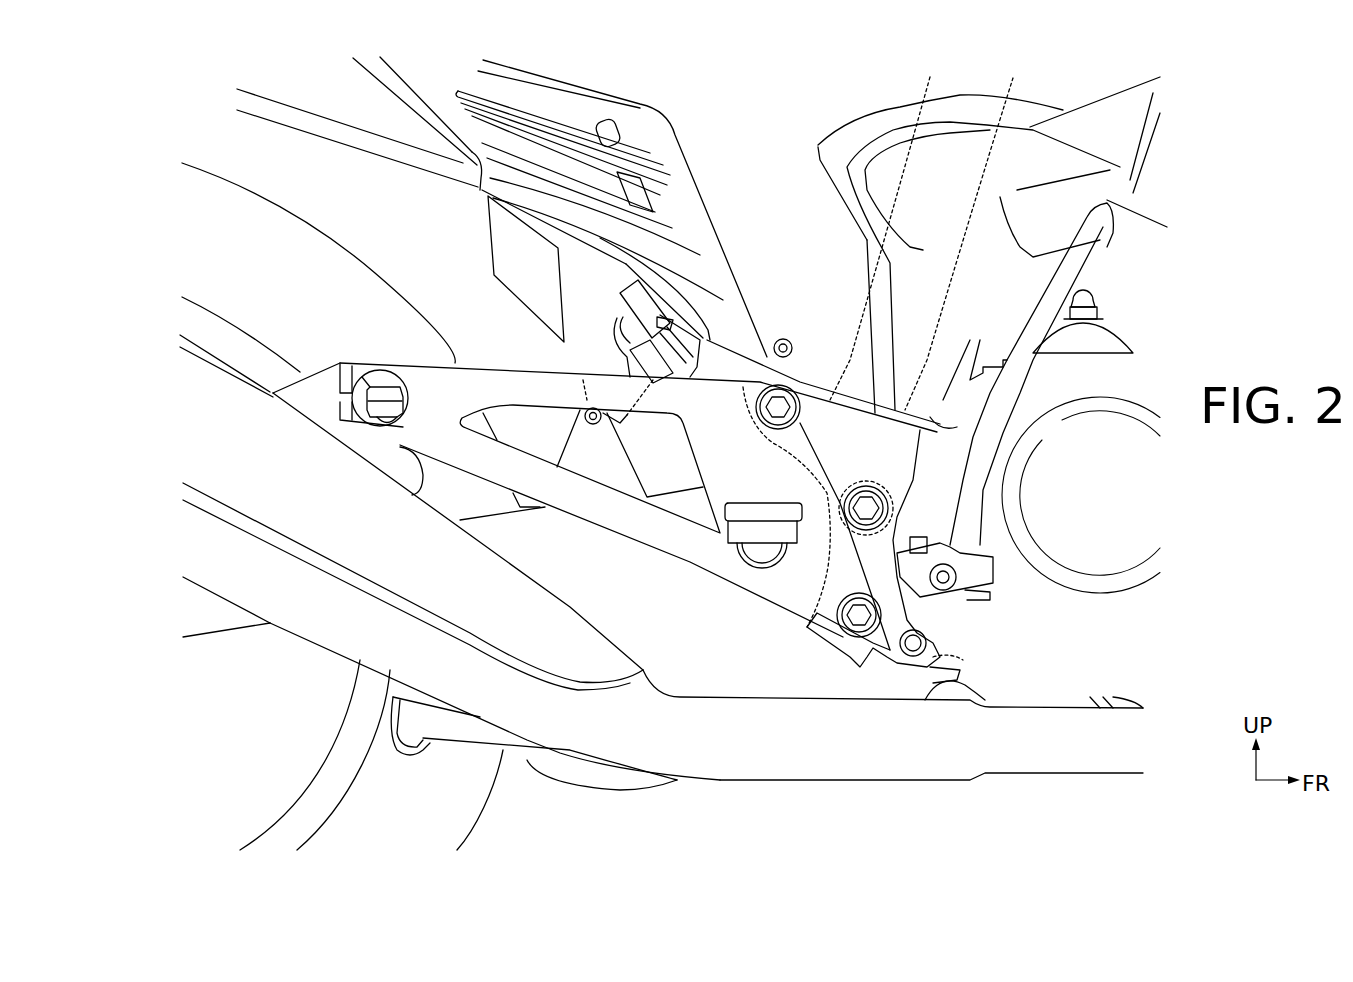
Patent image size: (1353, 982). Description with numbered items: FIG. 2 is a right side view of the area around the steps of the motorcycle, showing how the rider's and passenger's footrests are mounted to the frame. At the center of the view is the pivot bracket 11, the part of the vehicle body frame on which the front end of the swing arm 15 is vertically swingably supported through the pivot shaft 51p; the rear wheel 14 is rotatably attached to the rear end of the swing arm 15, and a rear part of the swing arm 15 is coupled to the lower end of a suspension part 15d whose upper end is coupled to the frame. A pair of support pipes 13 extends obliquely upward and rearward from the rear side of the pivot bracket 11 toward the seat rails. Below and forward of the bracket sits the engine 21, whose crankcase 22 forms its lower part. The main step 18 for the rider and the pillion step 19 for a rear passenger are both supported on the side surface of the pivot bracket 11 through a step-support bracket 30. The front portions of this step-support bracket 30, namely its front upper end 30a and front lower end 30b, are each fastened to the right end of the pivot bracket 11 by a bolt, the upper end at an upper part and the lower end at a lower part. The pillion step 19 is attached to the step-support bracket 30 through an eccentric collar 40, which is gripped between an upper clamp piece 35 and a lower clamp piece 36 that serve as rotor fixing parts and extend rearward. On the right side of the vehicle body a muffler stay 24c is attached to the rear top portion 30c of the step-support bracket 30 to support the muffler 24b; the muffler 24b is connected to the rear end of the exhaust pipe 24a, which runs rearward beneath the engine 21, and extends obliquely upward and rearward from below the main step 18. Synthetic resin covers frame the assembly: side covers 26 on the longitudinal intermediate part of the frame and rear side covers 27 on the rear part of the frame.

The rear wheel 14 is at (323, 238).
The rear side cover 27 is at (388, 155).
The support pipe 13 is at (613, 273).
The rear top portion 30c is at (398, 365).
The step-support bracket 30 is at (525, 362).
The suspension part 15d is at (610, 367).
The front upper end 30a is at (803, 380).
The side cover 26 is at (847, 320).
The muffler stay 24c is at (315, 370).
The upper clamp piece 35 is at (352, 363).
The eccentric collar 40 is at (382, 363).
The lower clamp piece 36 is at (348, 415).
The pillion step 19 is at (383, 423).
The pivot shaft 51p is at (870, 505).
The main step 18 is at (763, 537).
The crankcase 22 is at (1136, 527).
The engine 21 is at (1133, 547).
The pivot bracket 11 is at (825, 640).
The muffler 24b is at (253, 587).
The swing arm 15 is at (586, 573).
The exhaust pipe 24a is at (830, 763).
The front lower end 30b is at (858, 640).